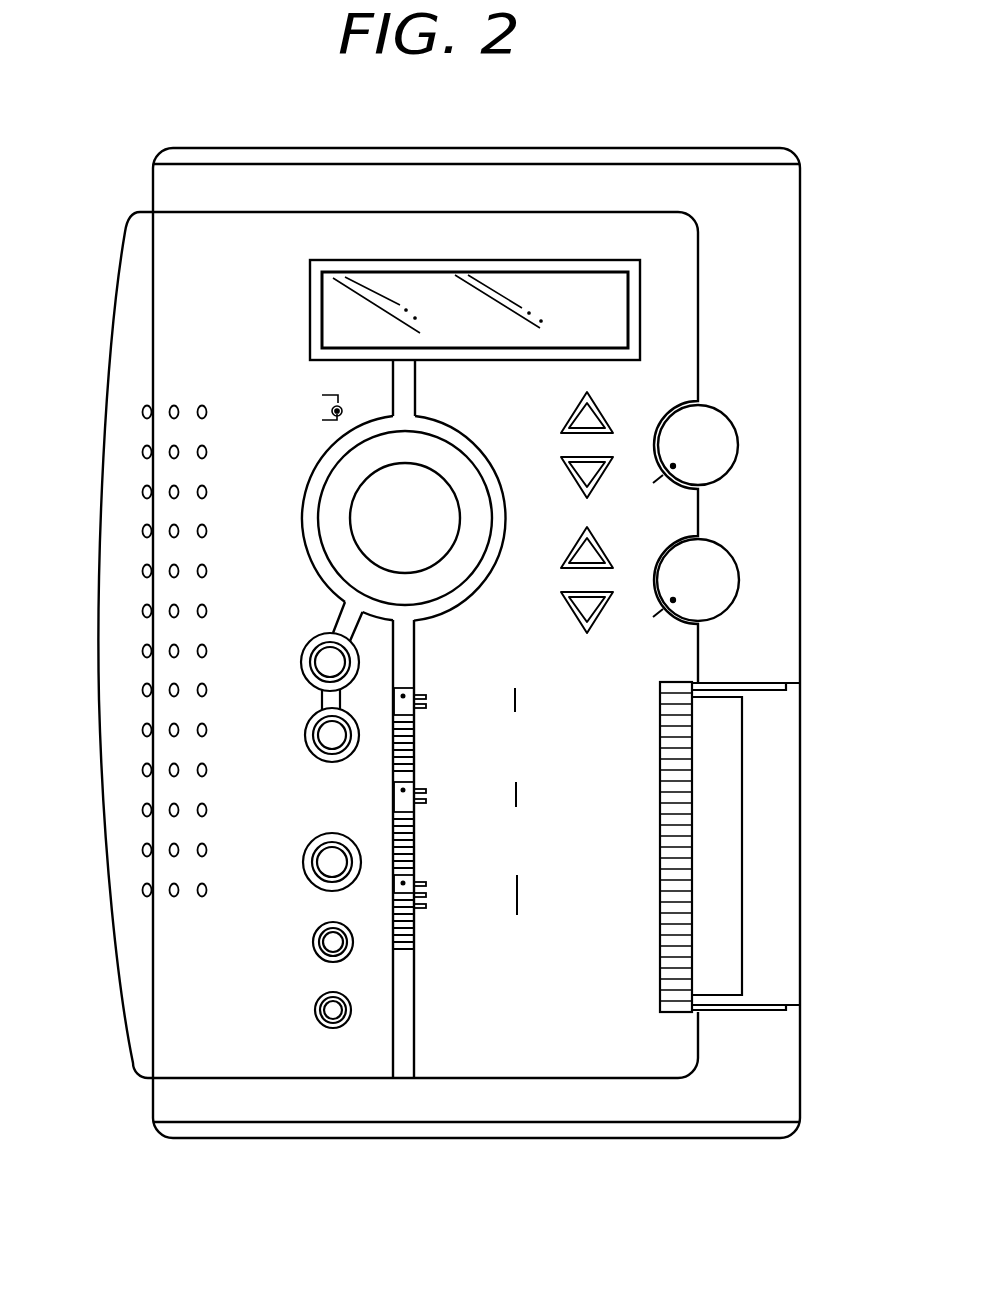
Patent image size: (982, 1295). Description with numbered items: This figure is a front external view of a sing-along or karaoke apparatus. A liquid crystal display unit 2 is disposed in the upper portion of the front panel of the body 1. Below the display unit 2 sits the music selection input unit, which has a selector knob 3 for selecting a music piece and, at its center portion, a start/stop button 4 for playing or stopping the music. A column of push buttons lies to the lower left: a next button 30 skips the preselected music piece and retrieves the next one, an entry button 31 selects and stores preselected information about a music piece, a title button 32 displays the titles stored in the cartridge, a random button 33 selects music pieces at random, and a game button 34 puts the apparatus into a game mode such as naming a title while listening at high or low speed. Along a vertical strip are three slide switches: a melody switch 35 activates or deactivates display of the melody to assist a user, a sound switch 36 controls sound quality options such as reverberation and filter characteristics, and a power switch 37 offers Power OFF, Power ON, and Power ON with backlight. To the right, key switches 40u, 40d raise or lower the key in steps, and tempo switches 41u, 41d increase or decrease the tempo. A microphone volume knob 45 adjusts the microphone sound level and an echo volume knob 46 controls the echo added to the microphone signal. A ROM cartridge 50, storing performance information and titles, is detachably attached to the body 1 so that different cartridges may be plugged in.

The body 1 is at (445, 148).
The liquid crystal display unit 2 is at (565, 290).
The selector knob 3 is at (325, 493).
The start/stop button 4 is at (363, 523).
The next button 30 is at (322, 665).
The entry button 31 is at (322, 737).
The title button 32 is at (305, 862).
The random button 33 is at (313, 952).
The game button 34 is at (308, 1013).
The melody switch 35 is at (415, 738).
The sound switch 36 is at (415, 831).
The power switch 37 is at (415, 938).
The key switch 40u is at (610, 415).
The key switch 40d is at (572, 485).
The tempo switch 41u is at (610, 568).
The tempo switch 41d is at (572, 620).
The microphone volume knob 45 is at (725, 440).
The echo volume knob 46 is at (718, 572).
The ROM cartridge 50 is at (800, 767).